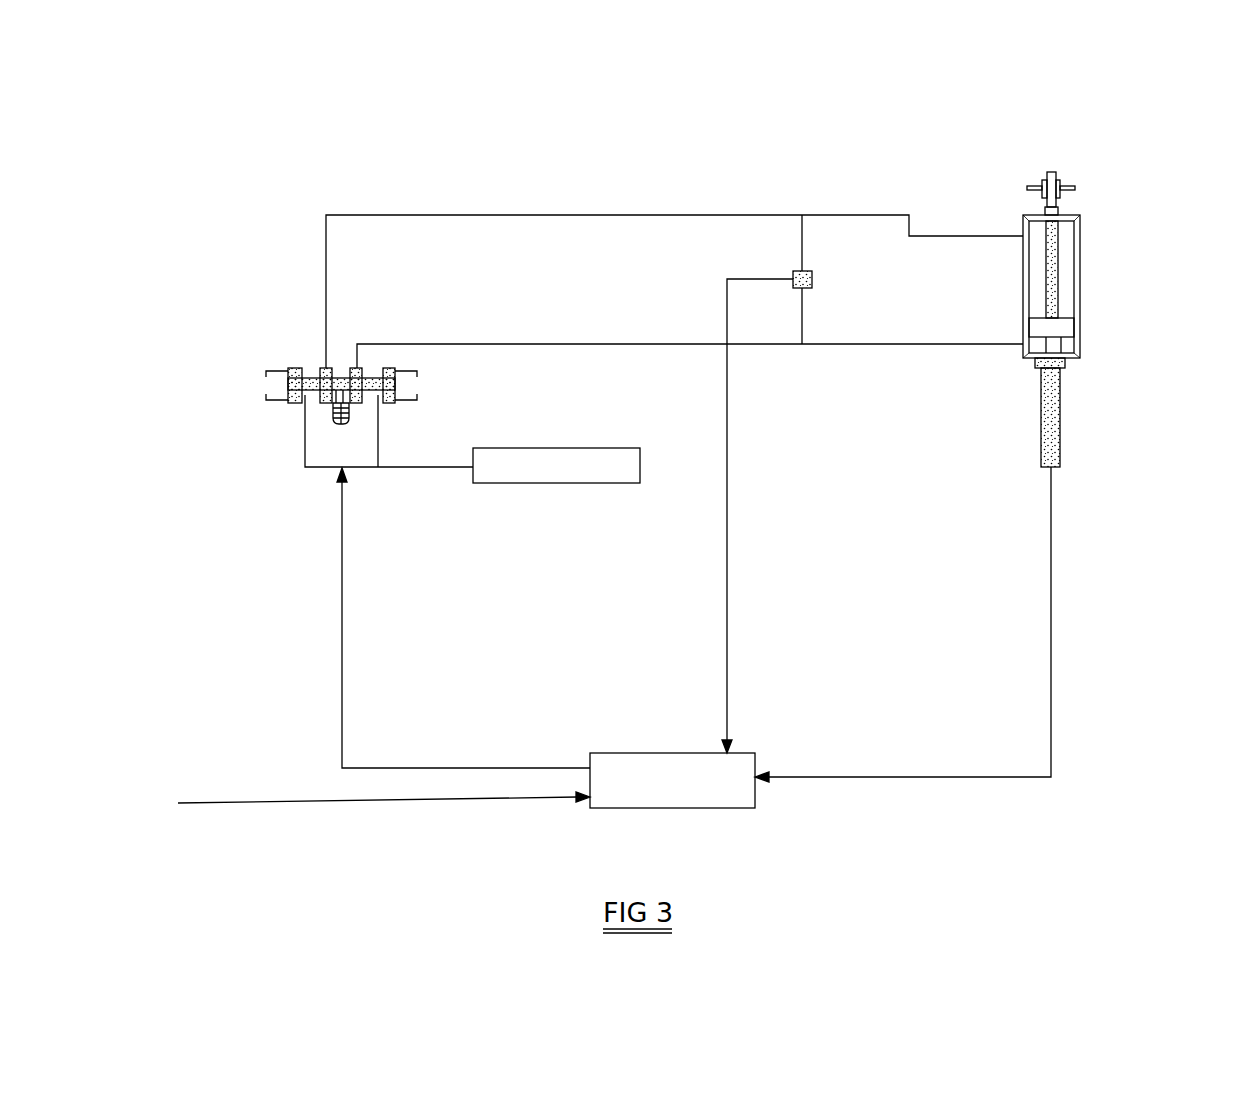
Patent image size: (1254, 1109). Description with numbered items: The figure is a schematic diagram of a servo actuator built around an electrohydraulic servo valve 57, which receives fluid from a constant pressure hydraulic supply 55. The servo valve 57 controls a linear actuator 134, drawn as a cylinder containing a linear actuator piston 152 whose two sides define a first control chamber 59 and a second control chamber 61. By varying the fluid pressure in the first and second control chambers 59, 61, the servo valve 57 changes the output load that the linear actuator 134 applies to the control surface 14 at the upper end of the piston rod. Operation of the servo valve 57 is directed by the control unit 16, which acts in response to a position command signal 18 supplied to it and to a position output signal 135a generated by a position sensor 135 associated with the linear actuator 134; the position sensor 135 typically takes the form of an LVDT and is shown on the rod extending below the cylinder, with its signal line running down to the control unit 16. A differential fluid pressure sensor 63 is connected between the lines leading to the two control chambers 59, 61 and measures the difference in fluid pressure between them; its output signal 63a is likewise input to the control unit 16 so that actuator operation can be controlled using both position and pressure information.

The control surface 14 is at (1054, 172).
The linear actuator 134 is at (1089, 203).
The first control chamber 59 is at (1065, 236).
The linear actuator piston 152 is at (1058, 303).
The second control chamber 61 is at (1067, 347).
The position sensor 135 is at (1061, 432).
The position output signal 135a is at (1051, 650).
The differential fluid pressure sensor 63 is at (812, 276).
The output signal 63a is at (727, 493).
The electrohydraulic servo valve 57 is at (288, 383).
The constant pressure hydraulic supply 55 is at (557, 483).
The control unit 16 is at (738, 792).
The position command signal 18 is at (360, 803).